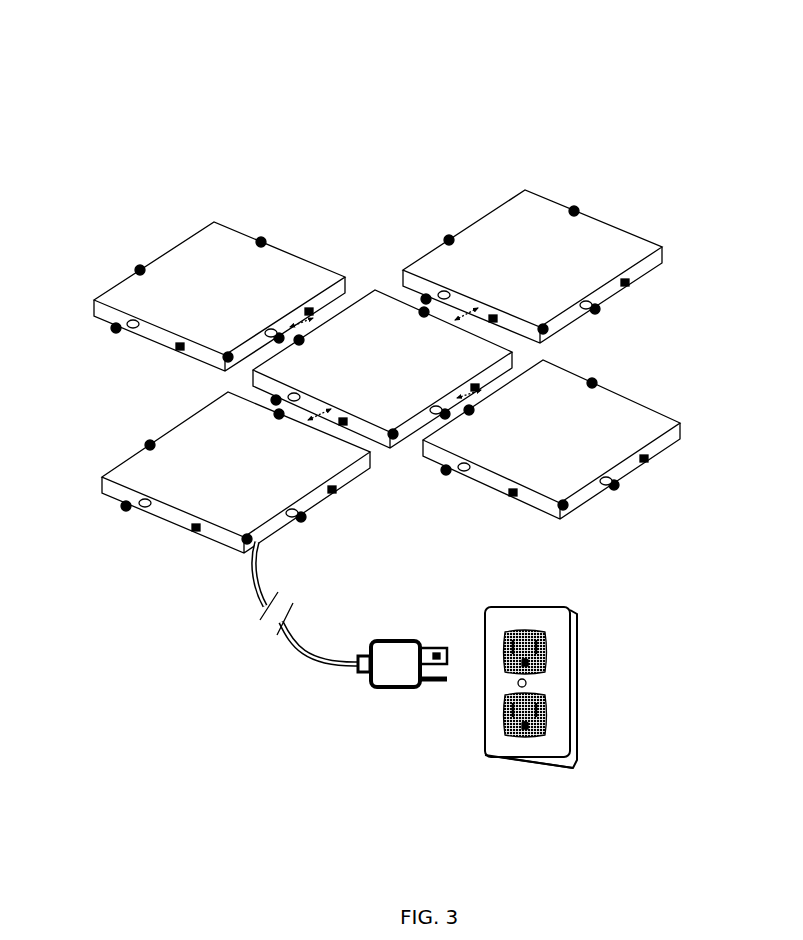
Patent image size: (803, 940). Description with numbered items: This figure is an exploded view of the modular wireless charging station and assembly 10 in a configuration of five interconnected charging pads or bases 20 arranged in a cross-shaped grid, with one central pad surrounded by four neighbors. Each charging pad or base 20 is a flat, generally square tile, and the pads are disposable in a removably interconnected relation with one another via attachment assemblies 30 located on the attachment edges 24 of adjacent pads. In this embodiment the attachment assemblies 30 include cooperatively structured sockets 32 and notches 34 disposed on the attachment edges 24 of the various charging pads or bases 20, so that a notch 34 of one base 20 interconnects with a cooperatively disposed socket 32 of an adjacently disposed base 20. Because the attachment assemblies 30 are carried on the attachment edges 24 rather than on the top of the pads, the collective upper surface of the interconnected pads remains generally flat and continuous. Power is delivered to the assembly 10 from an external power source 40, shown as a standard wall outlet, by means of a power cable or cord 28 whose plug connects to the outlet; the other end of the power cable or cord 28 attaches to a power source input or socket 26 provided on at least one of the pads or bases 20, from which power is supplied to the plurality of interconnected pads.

The wireless charging station and assembly 10 is at (537, 96).
The charging pad or base 20 is at (387, 363).
The attachment edge 24 is at (103, 313).
The power source input or socket 26 is at (562, 324).
The power cable or cord 28 is at (305, 661).
The attachment assembly 30 is at (690, 267).
The socket 32 is at (593, 305).
The notch 34 is at (634, 282).
The external power source 40 is at (577, 648).